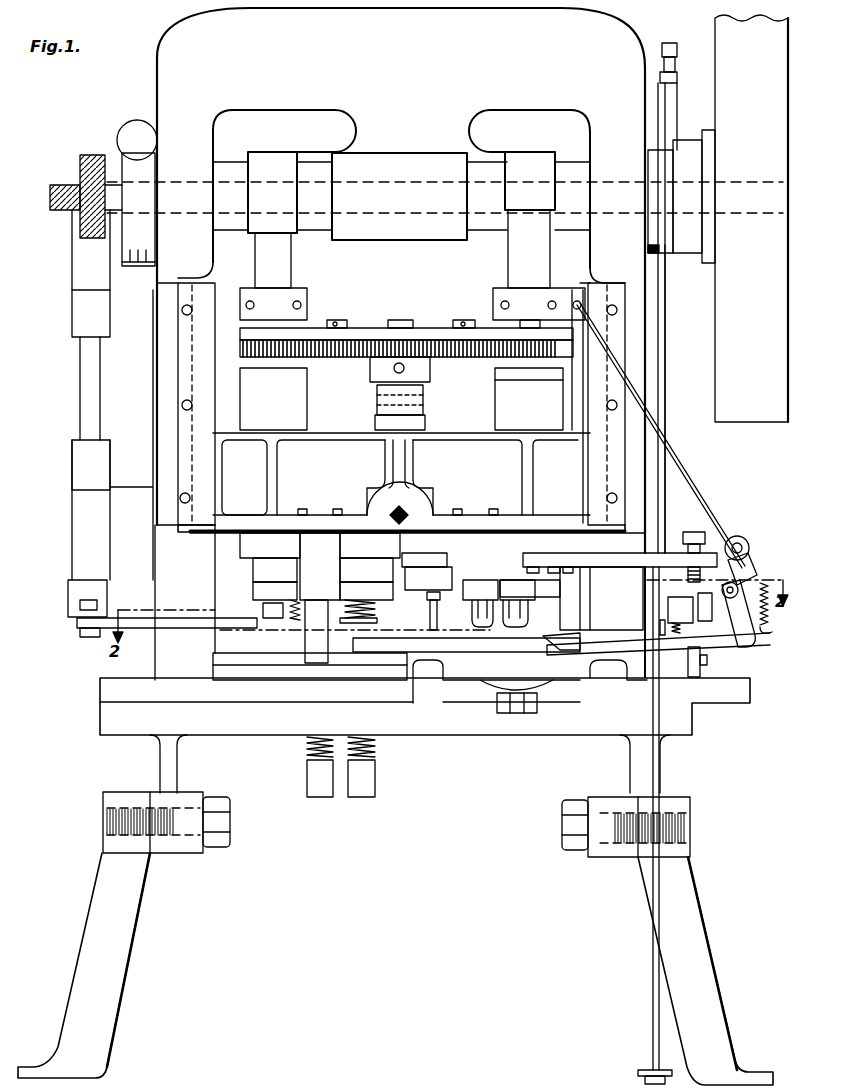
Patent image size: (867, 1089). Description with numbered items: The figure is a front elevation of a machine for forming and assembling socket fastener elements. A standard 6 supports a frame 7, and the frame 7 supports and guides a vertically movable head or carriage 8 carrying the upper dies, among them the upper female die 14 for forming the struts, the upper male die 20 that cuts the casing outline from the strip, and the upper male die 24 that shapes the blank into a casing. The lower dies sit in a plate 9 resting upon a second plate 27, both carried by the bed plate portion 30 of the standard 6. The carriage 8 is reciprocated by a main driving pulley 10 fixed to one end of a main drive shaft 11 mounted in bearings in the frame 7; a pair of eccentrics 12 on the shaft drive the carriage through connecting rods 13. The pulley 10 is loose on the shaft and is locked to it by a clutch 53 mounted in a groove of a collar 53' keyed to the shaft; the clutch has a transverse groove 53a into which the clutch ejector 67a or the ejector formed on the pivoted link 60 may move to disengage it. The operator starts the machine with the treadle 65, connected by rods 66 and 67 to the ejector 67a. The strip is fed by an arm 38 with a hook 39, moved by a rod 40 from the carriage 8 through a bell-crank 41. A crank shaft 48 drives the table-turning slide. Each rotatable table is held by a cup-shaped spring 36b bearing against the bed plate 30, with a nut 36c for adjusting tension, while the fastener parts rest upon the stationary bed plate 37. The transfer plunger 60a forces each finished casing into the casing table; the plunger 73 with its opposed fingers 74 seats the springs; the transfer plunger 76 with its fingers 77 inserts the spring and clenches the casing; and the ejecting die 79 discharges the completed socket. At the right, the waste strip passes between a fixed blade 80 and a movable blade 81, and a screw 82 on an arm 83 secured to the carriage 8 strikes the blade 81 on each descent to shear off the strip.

The standard 6 is at (124, 920).
The frame 7 is at (168, 78).
The head or carriage 8 is at (326, 446).
The plate 9 is at (214, 656).
The main driving pulley 10 is at (757, 408).
The main drive shaft 11 is at (624, 216).
The eccentrics 12 is at (270, 166).
The connecting rods 13 is at (293, 259).
The upper female die 14 is at (262, 606).
The upper male die 20 is at (300, 618).
The upper male die 24 is at (378, 623).
The second plate 27 is at (270, 670).
The bed plate portion 30 is at (106, 692).
The cup-shaped spring 36b is at (540, 698).
The nut 36c is at (511, 716).
The bed plate 37 is at (388, 648).
The arm 38 is at (748, 636).
The hook 39 is at (565, 634).
The rod 40 is at (695, 484).
The bell-crank 41 is at (770, 628).
The crank shaft 48 is at (70, 604).
The clutch 53 is at (639, 207).
The transverse groove 53a is at (658, 246).
The collar 53' is at (718, 183).
The pivoted link 60 is at (672, 106).
The transfer die or plunger 60a is at (496, 681).
The treadle 65 is at (649, 1072).
The rod 66 is at (661, 770).
The rod 67 is at (664, 373).
The clutch ejector 67a is at (668, 240).
The plunger 73 is at (480, 628).
The opposed fingers 74 is at (490, 628).
The transfer plunger 76 is at (513, 628).
The fingers 77 is at (522, 628).
The ejecting die 79 is at (440, 616).
The fixed blade 80 is at (692, 660).
The movable blade 81 is at (706, 618).
The screw 82 is at (730, 540).
The arm 83 is at (678, 550).